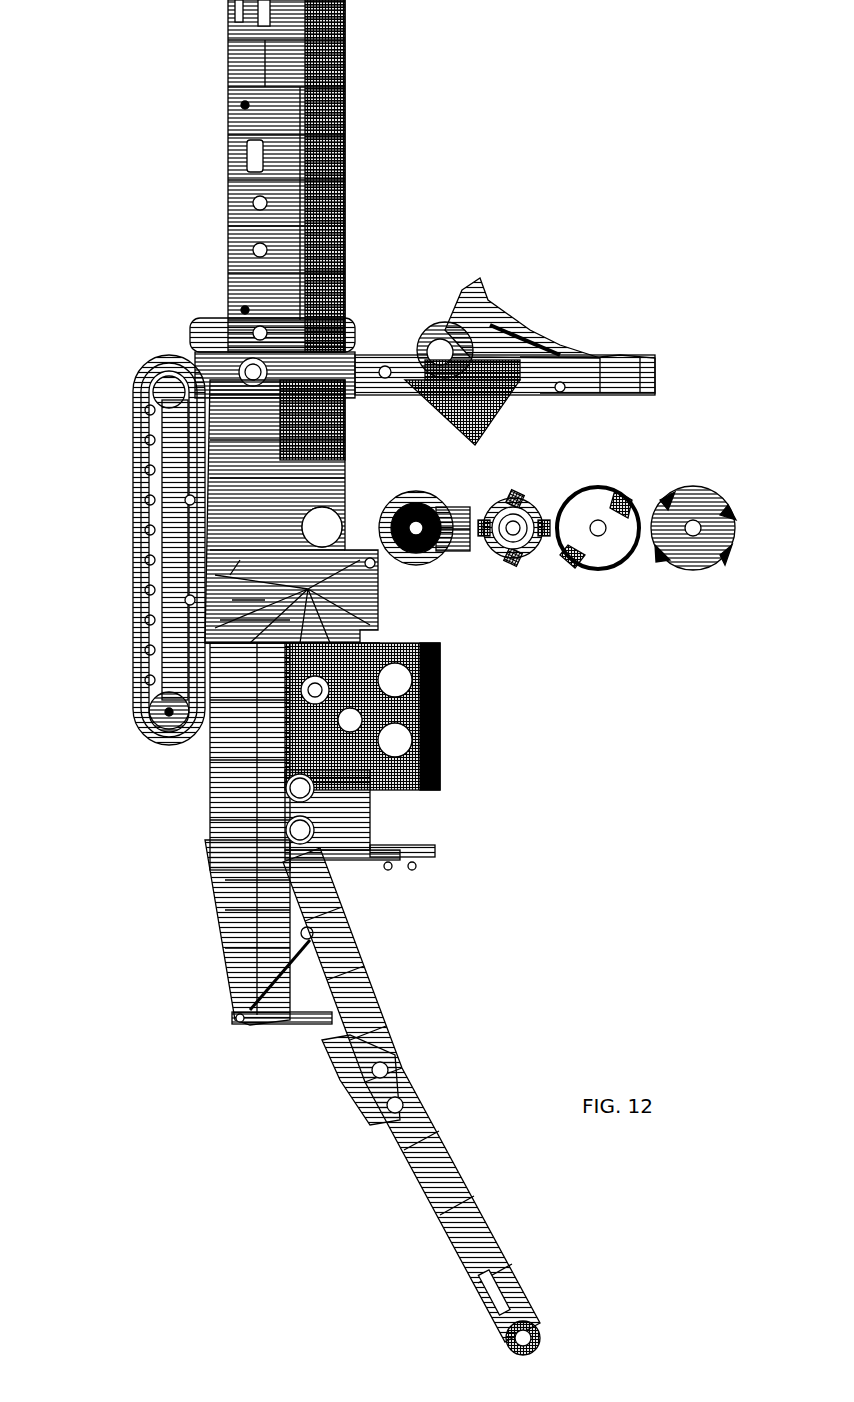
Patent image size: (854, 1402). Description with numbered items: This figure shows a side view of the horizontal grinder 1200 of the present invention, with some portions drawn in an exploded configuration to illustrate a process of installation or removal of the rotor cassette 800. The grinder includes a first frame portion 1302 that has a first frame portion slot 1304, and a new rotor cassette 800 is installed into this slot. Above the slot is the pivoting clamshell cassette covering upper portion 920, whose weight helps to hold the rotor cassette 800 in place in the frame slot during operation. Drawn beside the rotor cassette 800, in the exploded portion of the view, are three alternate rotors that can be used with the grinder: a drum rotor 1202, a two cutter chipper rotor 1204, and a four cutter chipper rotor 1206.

The horizontal grinder 1200 is at (462, 863).
The first frame portion slot 1304 is at (305, 525).
The first frame portion 1302 is at (255, 575).
The pivoting clamshell cassette covering upper portion 920 is at (606, 268).
The rotor cassette 800 is at (466, 556).
The drum rotor 1202 is at (532, 566).
The two cutter chipper rotor 1204 is at (607, 483).
The four cutter chipper rotor 1206 is at (730, 496).